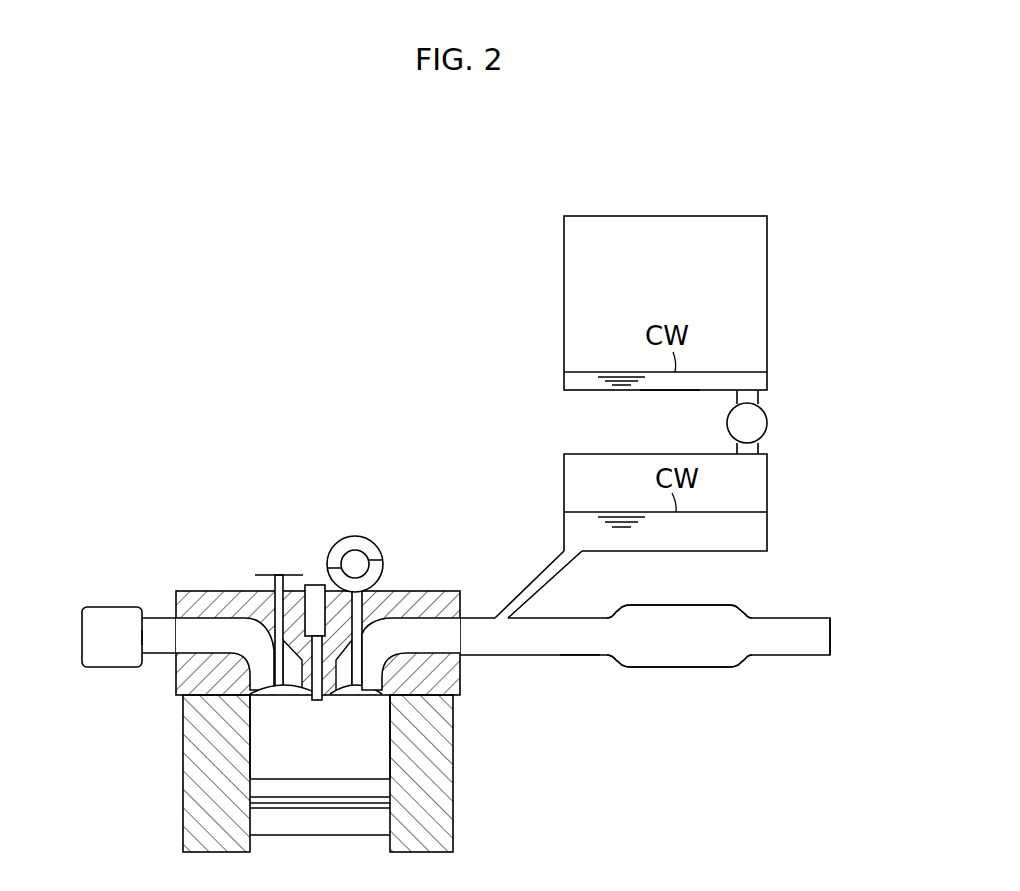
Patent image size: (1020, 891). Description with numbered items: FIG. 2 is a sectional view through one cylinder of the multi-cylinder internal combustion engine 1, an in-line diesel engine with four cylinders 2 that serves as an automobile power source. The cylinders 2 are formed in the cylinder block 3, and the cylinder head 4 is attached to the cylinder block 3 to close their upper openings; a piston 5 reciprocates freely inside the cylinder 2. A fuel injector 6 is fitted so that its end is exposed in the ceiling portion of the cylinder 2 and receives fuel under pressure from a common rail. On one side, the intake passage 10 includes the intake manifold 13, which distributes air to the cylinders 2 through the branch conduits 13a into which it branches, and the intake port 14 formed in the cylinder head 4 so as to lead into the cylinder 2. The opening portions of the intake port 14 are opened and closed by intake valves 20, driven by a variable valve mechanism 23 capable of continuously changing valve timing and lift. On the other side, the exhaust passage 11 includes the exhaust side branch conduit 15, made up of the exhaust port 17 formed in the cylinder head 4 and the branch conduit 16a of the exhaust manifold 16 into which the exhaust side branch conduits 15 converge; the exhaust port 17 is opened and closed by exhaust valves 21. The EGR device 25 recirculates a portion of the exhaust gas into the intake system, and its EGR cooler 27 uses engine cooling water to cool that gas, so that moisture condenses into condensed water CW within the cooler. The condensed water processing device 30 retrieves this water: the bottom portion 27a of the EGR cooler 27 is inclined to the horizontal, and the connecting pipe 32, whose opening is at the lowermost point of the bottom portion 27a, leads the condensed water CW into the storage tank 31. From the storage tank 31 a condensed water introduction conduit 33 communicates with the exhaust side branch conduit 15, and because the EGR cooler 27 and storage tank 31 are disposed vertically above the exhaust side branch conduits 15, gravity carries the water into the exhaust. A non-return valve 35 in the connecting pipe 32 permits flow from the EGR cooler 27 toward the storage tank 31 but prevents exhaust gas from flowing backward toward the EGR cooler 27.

The internal combustion engine 1 is at (277, 430).
The cylinder 2 is at (388, 745).
The cylinder block 3 is at (447, 777).
The cylinder head 4 is at (440, 592).
The piston 5 is at (260, 818).
The fuel injector 6 is at (310, 592).
The intake passage 10 is at (108, 602).
The exhaust passage 11 is at (786, 616).
The intake manifold 13 is at (102, 662).
The branch conduit 13a is at (160, 645).
The intake port 14 is at (192, 630).
The exhaust side branch conduit 15 is at (615, 698).
The exhaust manifold 16 is at (692, 672).
The branch conduit 16a is at (571, 645).
The exhaust port 17 is at (462, 672).
The intake valve 20 is at (273, 613).
The exhaust valve 21 is at (363, 632).
The variable valve mechanism 23 is at (350, 536).
The EGR device 25 is at (672, 213).
The EGR cooler 27 is at (595, 230).
The bottom portion 27a is at (660, 392).
The condensed water processing device 30 is at (806, 378).
The storage tank 31 is at (767, 495).
The connecting pipe 32 is at (750, 449).
The condensed water introduction conduit 33 is at (542, 572).
The non-return valve 35 is at (753, 422).